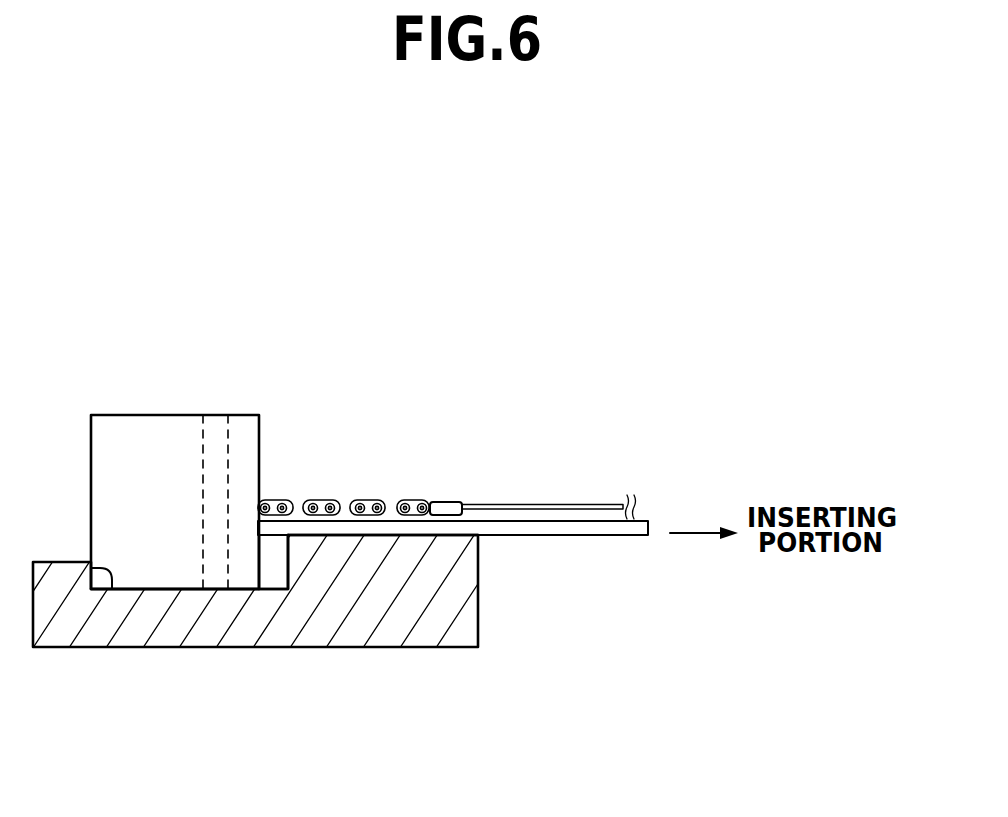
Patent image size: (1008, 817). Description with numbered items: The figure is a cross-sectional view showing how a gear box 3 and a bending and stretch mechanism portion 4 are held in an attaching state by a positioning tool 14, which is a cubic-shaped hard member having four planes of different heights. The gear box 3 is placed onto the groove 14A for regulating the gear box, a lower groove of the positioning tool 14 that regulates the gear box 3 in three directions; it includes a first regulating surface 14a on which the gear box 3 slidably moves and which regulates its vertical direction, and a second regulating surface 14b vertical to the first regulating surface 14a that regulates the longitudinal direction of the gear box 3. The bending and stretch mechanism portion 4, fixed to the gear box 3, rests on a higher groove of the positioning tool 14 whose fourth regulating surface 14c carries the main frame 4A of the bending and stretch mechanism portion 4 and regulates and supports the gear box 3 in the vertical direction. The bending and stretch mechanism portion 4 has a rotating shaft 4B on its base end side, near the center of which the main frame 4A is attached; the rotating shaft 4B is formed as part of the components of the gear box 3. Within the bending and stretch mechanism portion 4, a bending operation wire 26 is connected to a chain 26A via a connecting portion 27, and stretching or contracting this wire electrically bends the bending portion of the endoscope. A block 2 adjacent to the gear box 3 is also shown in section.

The optical module / housing block 2 is at (117, 385).
The gear box 3 is at (220, 414).
The bending and stretch mechanism portion 4 is at (455, 439).
The main frame 4A is at (590, 532).
The rotating shaft 4B is at (206, 440).
The positioning tool 14 is at (463, 633).
The first regulating surface 14a is at (153, 589).
The second regulating surface 14b is at (110, 568).
The fourth regulating surface 14c is at (347, 537).
The groove for regulating the gear box 14A is at (273, 567).
The bending operation wire 26 is at (542, 507).
The chain 26A is at (322, 500).
The connecting portion 27 is at (443, 502).